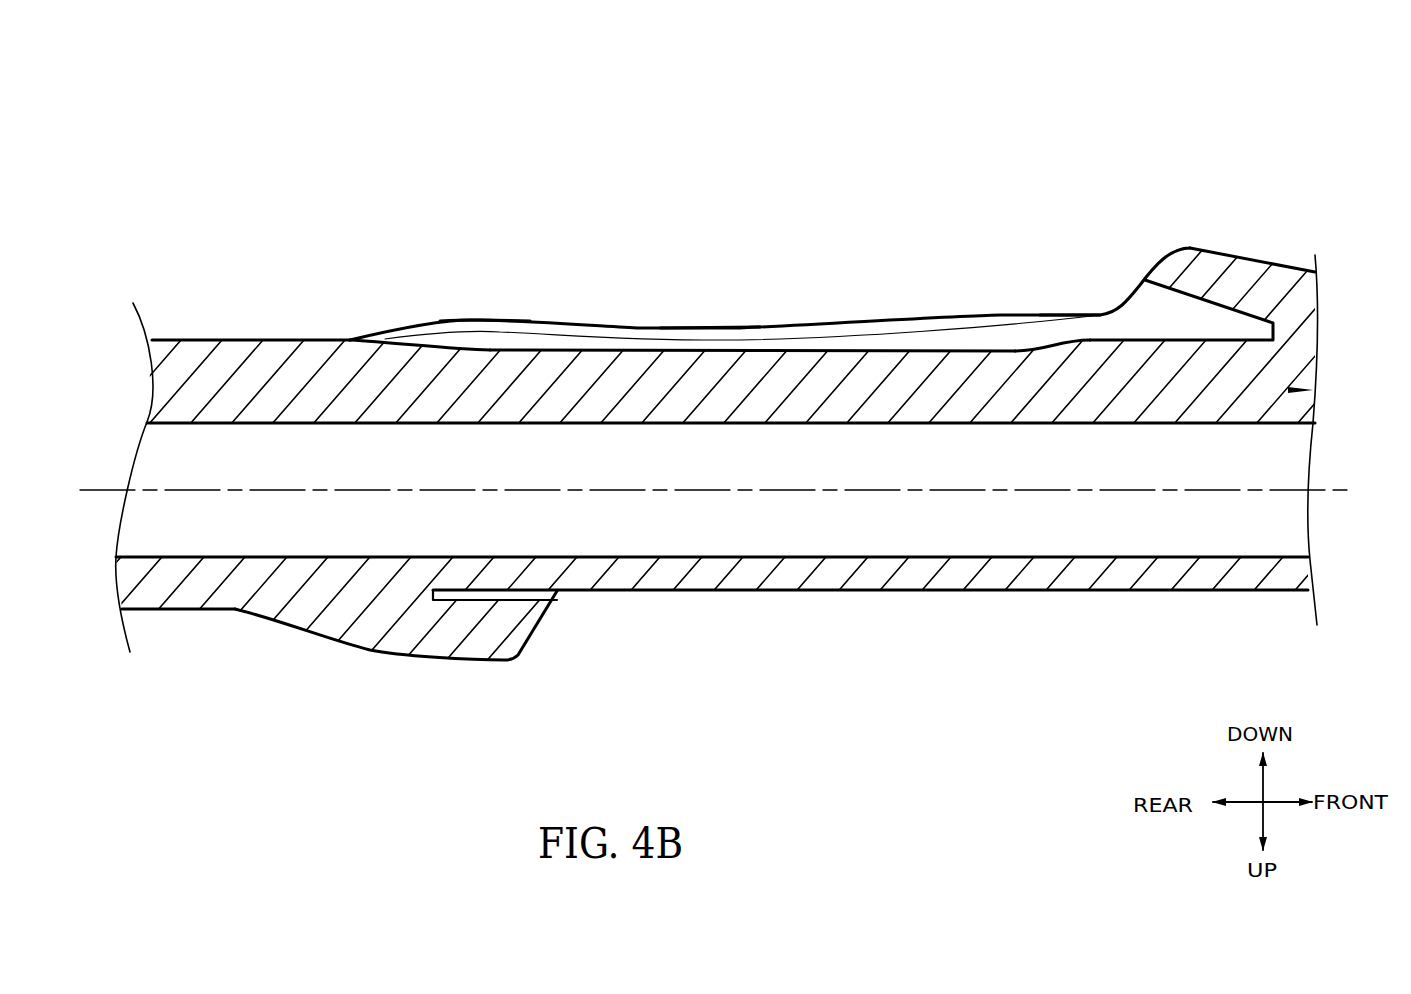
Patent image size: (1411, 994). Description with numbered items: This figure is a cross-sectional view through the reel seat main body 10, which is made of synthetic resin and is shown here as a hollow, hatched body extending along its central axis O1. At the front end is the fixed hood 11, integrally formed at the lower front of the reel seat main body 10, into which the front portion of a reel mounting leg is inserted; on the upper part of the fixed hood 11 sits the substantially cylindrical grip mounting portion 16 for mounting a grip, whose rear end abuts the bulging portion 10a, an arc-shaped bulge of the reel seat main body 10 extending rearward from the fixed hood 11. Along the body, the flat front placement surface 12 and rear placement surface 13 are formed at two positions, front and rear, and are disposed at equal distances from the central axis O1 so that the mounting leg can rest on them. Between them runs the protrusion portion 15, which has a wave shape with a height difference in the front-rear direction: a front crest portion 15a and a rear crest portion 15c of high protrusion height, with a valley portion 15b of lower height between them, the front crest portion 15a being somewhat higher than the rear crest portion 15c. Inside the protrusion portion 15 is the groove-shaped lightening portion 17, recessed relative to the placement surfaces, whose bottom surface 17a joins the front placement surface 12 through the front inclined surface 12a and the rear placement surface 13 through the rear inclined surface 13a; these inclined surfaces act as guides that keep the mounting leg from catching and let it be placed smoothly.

The reel seat main body 10 is at (311, 161).
The bulging portion 10a is at (533, 633).
The fixed hood 11 is at (1260, 268).
The front placement surface 12 is at (1155, 340).
The front inclined surface 12a is at (1045, 348).
The rear placement surface 13 is at (318, 338).
The rear inclined surface 13a is at (443, 345).
The protrusion portion 15 is at (1012, 304).
The front crest portion 15a is at (1082, 313).
The valley portion 15b is at (708, 327).
The rear crest portion 15c is at (485, 320).
The grip mounting portion 16 is at (1112, 590).
The lightening portion 17 is at (877, 342).
The bottom surface 17a is at (638, 348).
The central axis O1 is at (1332, 490).